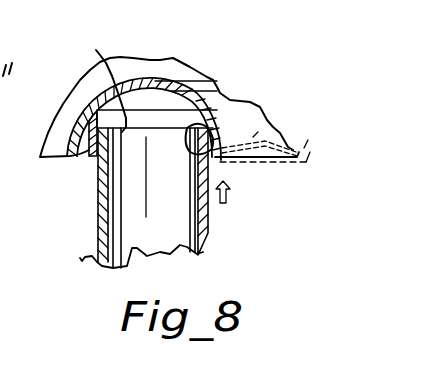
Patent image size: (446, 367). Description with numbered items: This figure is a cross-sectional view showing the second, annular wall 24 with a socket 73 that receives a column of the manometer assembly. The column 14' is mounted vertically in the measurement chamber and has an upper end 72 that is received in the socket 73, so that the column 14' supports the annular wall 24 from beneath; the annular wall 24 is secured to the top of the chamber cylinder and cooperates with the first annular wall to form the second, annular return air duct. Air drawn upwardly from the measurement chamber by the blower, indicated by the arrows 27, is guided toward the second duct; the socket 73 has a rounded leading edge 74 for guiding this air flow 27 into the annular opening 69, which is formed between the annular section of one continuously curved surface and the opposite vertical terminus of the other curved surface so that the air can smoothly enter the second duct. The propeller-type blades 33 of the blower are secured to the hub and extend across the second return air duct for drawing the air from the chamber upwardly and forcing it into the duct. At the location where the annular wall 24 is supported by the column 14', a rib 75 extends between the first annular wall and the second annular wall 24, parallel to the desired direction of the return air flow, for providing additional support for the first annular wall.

The column 14' is at (247, 212).
The second annular wall 24 is at (72, 91).
The upwardly flowing air 27 is at (212, 189).
The propeller-type blades 33 is at (289, 97).
The annular opening 69 is at (228, 135).
The upper end 72 is at (97, 51).
The socket 73 is at (212, 132).
The rounded leading edge 74 is at (215, 157).
The rib 75 is at (150, 61).